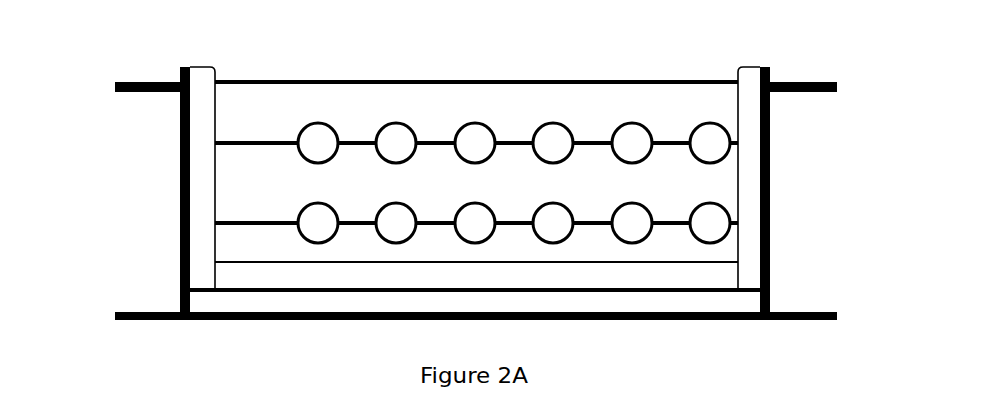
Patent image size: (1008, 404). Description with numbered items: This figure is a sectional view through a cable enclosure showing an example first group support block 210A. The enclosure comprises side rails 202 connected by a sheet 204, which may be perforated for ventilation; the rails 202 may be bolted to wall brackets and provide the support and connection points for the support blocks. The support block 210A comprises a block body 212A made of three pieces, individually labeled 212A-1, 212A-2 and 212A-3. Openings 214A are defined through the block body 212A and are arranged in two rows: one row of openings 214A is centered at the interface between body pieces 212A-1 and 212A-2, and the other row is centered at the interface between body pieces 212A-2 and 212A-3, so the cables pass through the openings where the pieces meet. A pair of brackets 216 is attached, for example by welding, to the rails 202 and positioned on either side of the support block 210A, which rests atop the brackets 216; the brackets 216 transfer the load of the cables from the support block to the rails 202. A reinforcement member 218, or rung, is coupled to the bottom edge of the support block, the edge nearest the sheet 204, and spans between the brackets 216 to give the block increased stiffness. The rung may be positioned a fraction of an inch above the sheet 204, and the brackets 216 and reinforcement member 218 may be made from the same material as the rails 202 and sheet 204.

The first group support block 210A is at (472, 192).
The side rails 202 is at (772, 212).
The sheet 204 is at (428, 318).
The block body 212A is at (411, 198).
The body piece 212A-1 is at (232, 103).
The body piece 212A-2 is at (232, 174).
The body piece 212A-3 is at (232, 237).
The openings 214A is at (547, 150).
The brackets 216 is at (204, 272).
The reinforcement member 218 is at (635, 273).